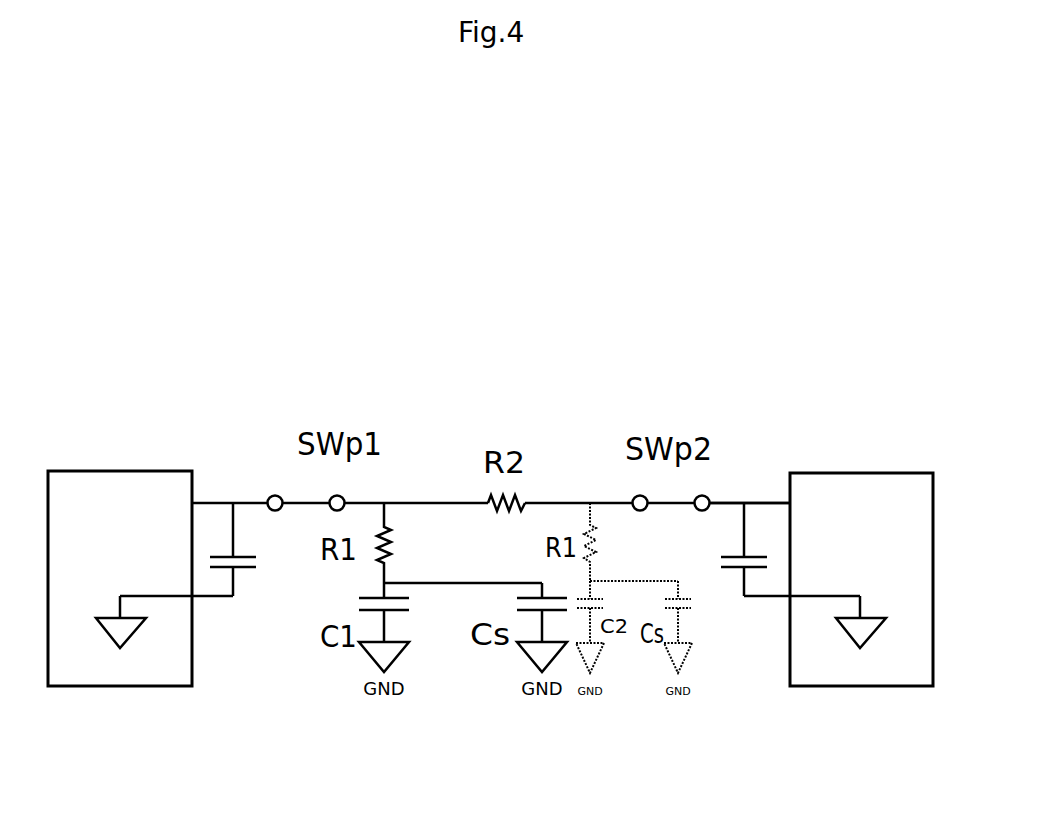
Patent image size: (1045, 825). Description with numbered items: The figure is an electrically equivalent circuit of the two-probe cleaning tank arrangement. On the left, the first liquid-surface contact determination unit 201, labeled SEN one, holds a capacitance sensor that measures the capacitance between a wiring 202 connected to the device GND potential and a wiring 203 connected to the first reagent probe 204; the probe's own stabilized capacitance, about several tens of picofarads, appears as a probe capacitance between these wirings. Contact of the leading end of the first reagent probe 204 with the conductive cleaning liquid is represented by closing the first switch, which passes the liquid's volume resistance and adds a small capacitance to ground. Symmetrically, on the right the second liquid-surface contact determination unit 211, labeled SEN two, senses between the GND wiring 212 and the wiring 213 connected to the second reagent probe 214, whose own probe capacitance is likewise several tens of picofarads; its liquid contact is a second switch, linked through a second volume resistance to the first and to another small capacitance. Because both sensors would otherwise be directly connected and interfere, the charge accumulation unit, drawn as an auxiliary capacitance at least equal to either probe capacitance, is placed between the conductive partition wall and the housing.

The first liquid-surface contact determination unit 201 is at (60, 494).
The wiring 202 is at (220, 597).
The wiring 203 is at (220, 503).
The first reagent probe 204 is at (287, 620).
The second liquid-surface contact determination unit 211 is at (922, 495).
The wiring 212 is at (781, 596).
The wiring 213 is at (765, 503).
The second reagent probe 214 is at (718, 645).